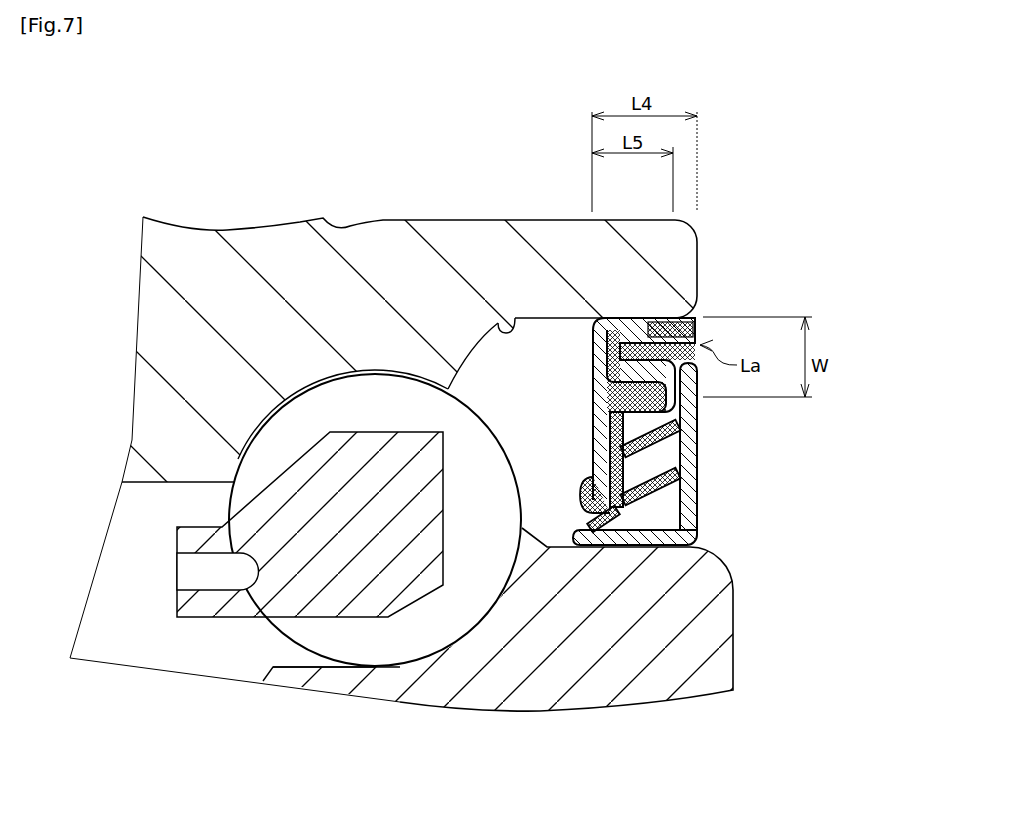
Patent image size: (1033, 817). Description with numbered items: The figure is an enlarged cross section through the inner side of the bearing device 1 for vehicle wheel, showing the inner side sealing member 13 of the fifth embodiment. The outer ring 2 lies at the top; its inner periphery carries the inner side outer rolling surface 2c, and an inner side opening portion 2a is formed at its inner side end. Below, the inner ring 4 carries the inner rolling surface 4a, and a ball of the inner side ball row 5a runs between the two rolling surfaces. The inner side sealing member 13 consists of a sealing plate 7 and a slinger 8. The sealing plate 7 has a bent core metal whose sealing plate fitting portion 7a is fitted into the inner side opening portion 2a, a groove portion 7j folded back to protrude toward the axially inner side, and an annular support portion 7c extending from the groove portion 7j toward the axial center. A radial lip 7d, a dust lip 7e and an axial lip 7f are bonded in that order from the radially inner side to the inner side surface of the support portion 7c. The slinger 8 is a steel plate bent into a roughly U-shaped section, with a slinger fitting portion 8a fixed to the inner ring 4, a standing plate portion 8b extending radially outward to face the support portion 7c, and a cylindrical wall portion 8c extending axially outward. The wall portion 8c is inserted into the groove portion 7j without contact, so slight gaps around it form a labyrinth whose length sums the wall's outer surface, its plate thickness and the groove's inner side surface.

The bearing device for vehicle wheel 1 is at (469, 444).
The outer ring 2 is at (395, 396).
The inner side opening portion 2a is at (504, 327).
The inner side outer rolling surface 2c is at (373, 372).
The inner ring 4 is at (410, 651).
The inner rolling surface 4a is at (388, 662).
The inner side ball row 5a is at (245, 472).
The sealing plate 7 is at (599, 425).
The sealing plate fitting portion 7a is at (615, 346).
The support portion 7c is at (597, 428).
The radial lip 7d is at (577, 518).
The dust lip 7e is at (585, 493).
The axial lip 7f is at (615, 440).
The groove portion 7j is at (612, 386).
The slinger 8 is at (677, 433).
The slinger fitting portion 8a is at (657, 520).
The standing plate portion 8b is at (690, 463).
The wall portion 8c is at (690, 393).
The inner side sealing member 13 is at (687, 431).